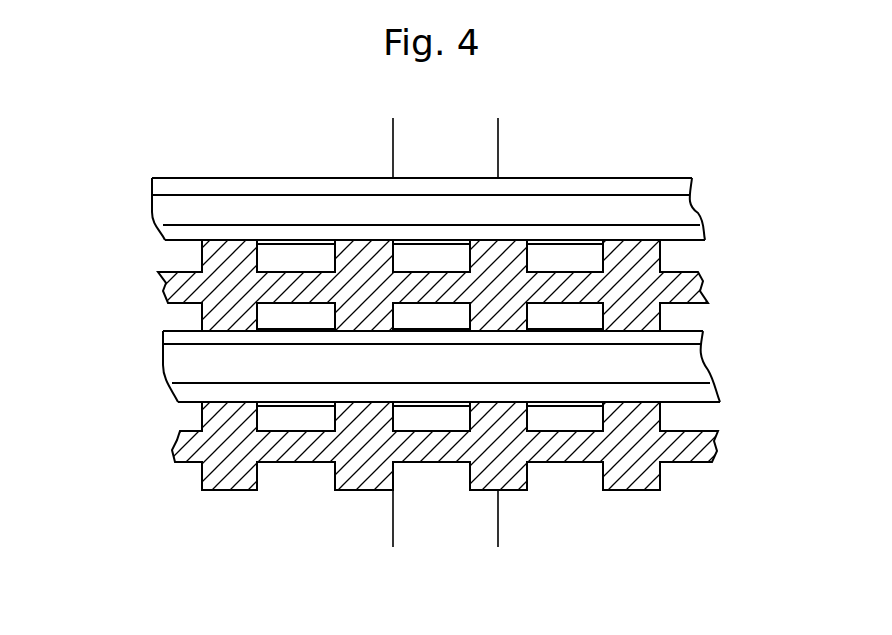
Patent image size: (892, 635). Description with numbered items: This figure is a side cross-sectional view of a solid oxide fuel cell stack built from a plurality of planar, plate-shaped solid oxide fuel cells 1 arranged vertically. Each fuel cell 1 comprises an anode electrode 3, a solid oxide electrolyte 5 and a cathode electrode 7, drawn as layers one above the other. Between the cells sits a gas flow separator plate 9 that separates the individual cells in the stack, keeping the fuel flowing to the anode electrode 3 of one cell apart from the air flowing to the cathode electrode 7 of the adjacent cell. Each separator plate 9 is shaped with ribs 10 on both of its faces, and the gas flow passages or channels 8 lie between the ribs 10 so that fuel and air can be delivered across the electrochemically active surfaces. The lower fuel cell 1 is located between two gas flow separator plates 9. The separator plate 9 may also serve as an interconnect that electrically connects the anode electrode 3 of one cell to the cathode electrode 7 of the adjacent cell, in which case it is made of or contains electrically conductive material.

The solid oxide fuel cell 1 is at (432, 287).
The anode electrode 3 is at (152, 187).
The solid oxide electrolyte 5 is at (152, 212).
The cathode electrode 7 is at (165, 238).
The gas flow passages or channels 8 is at (571, 486).
The gas flow separator plate 9 is at (429, 365).
The ribs 10 is at (202, 264).